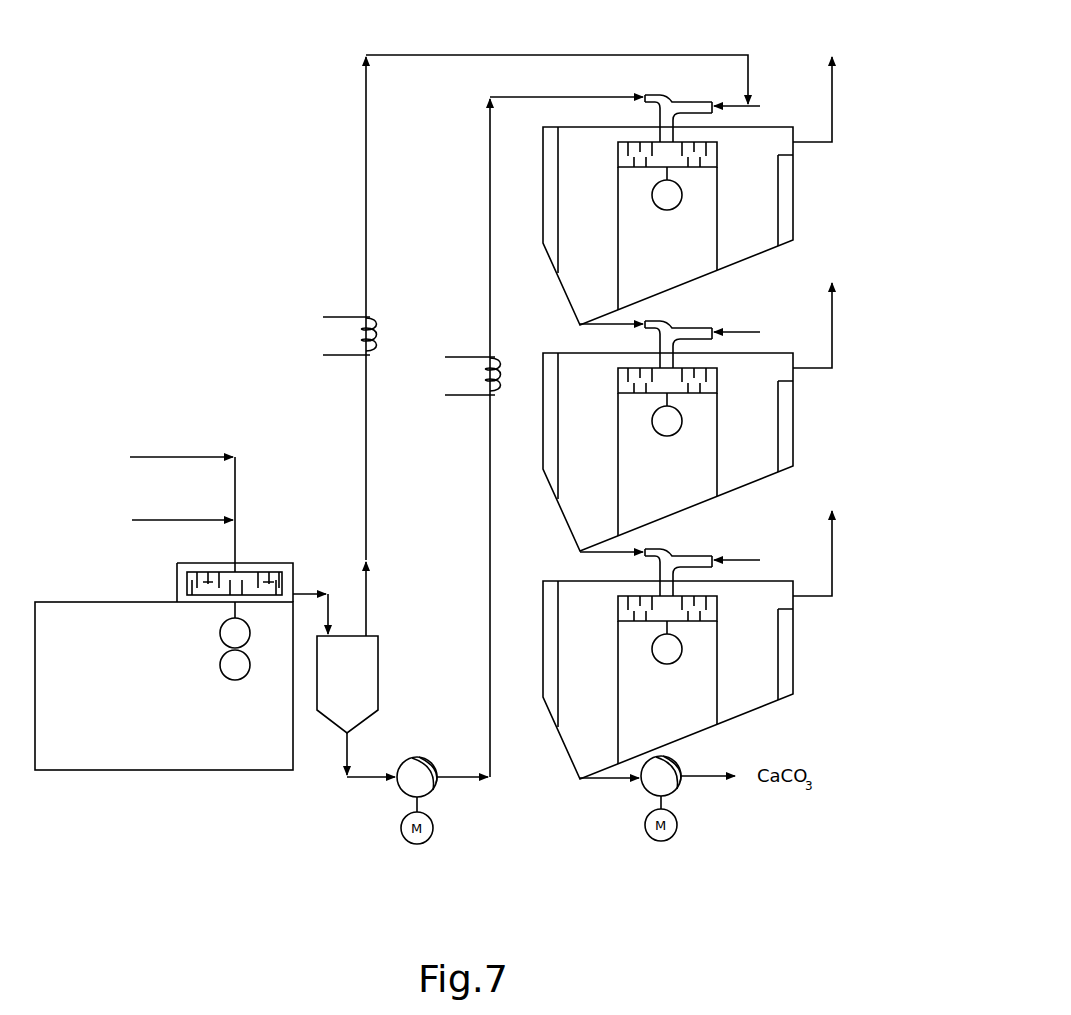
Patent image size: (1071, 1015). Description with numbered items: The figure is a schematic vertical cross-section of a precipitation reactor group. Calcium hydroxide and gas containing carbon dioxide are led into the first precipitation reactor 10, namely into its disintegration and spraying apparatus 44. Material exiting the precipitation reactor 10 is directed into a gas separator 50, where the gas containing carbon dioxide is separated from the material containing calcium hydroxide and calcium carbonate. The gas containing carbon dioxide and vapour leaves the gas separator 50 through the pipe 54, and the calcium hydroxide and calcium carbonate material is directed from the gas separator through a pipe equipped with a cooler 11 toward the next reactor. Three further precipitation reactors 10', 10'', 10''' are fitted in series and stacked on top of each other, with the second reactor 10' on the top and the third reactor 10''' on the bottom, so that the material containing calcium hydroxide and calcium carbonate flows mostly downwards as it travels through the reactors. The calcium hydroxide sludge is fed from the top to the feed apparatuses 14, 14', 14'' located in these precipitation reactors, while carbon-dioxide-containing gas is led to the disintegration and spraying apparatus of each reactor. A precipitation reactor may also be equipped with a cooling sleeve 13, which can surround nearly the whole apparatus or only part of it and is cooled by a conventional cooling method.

The precipitation reactor 10 is at (181, 608).
The disintegration and spraying apparatus 44 is at (253, 550).
The gas separator 50 is at (356, 706).
The pipe 54 is at (368, 283).
The cooler 11 is at (408, 356).
The second precipitation reactor 10' is at (712, 166).
The precipitation reactor 10'' is at (712, 392).
The third precipitation reactor 10''' is at (712, 620).
The cooling sleeve 13 is at (790, 222).
The feed apparatus 14 is at (645, 176).
The feed apparatus 14' is at (645, 402).
The feed apparatus 14'' is at (644, 630).